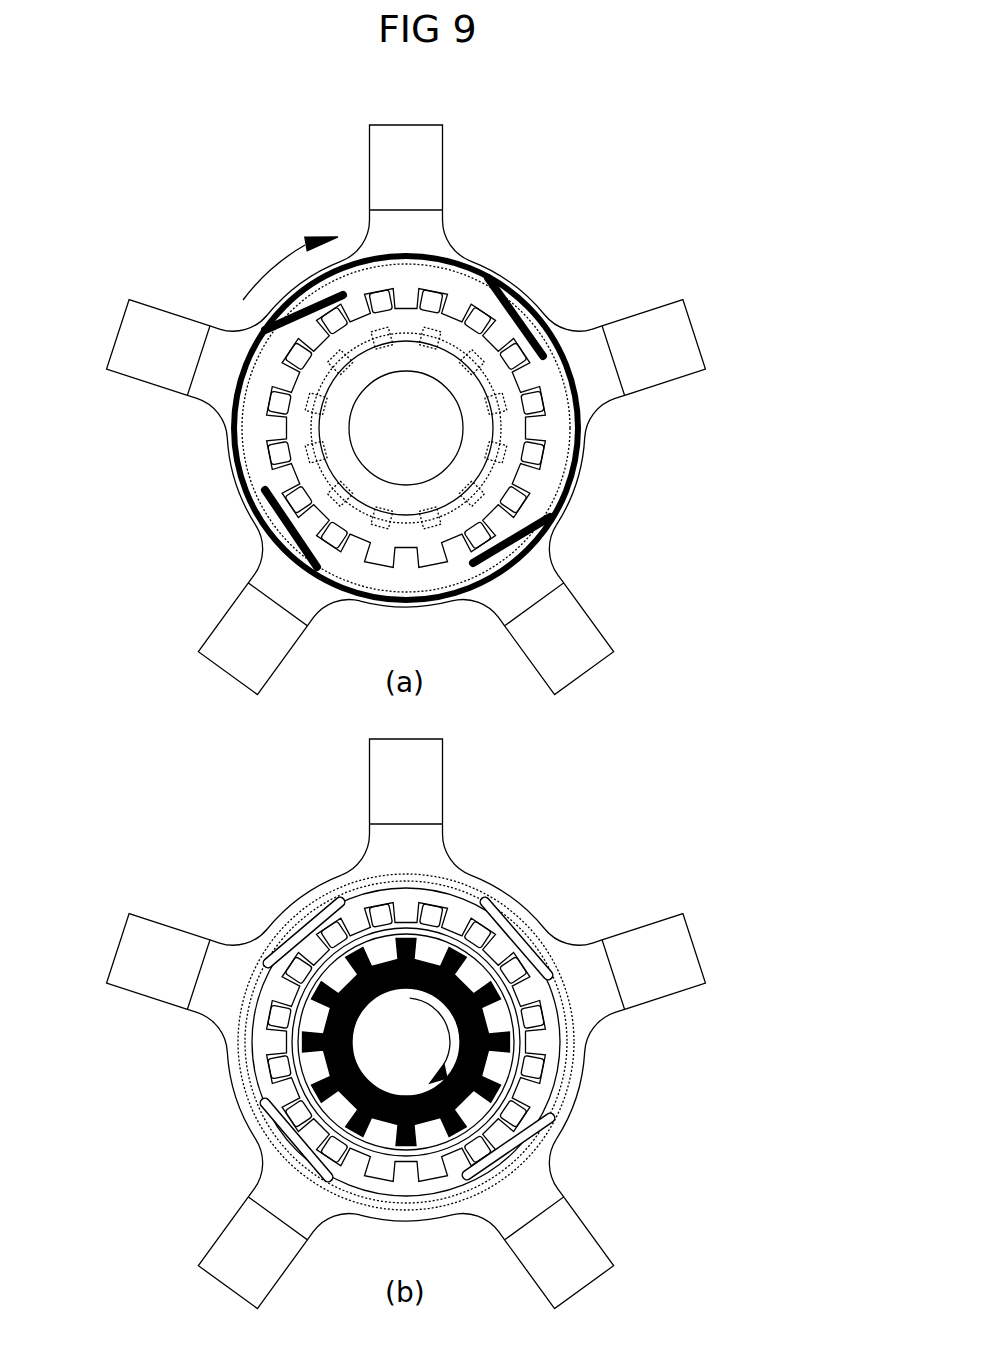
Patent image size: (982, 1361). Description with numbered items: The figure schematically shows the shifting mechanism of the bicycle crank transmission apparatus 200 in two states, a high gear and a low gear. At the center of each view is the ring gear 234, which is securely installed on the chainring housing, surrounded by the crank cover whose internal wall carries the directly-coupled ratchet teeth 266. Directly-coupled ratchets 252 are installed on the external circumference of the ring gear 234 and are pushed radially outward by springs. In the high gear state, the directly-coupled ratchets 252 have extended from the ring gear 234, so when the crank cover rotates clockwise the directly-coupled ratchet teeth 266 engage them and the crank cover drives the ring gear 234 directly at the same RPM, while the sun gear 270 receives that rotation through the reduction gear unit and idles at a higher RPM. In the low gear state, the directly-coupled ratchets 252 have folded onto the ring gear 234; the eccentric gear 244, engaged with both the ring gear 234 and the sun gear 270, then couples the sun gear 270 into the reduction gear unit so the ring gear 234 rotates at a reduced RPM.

The bicycle crank transmission apparatus 200 is at (226, 250).
The ring gear 234 is at (553, 425).
The directly-coupled ratchets 252 is at (481, 268).
The directly-coupled ratchet teeth 266 is at (585, 468).
The sun gear 270 is at (452, 932).
The eccentric gear 244 is at (520, 960).